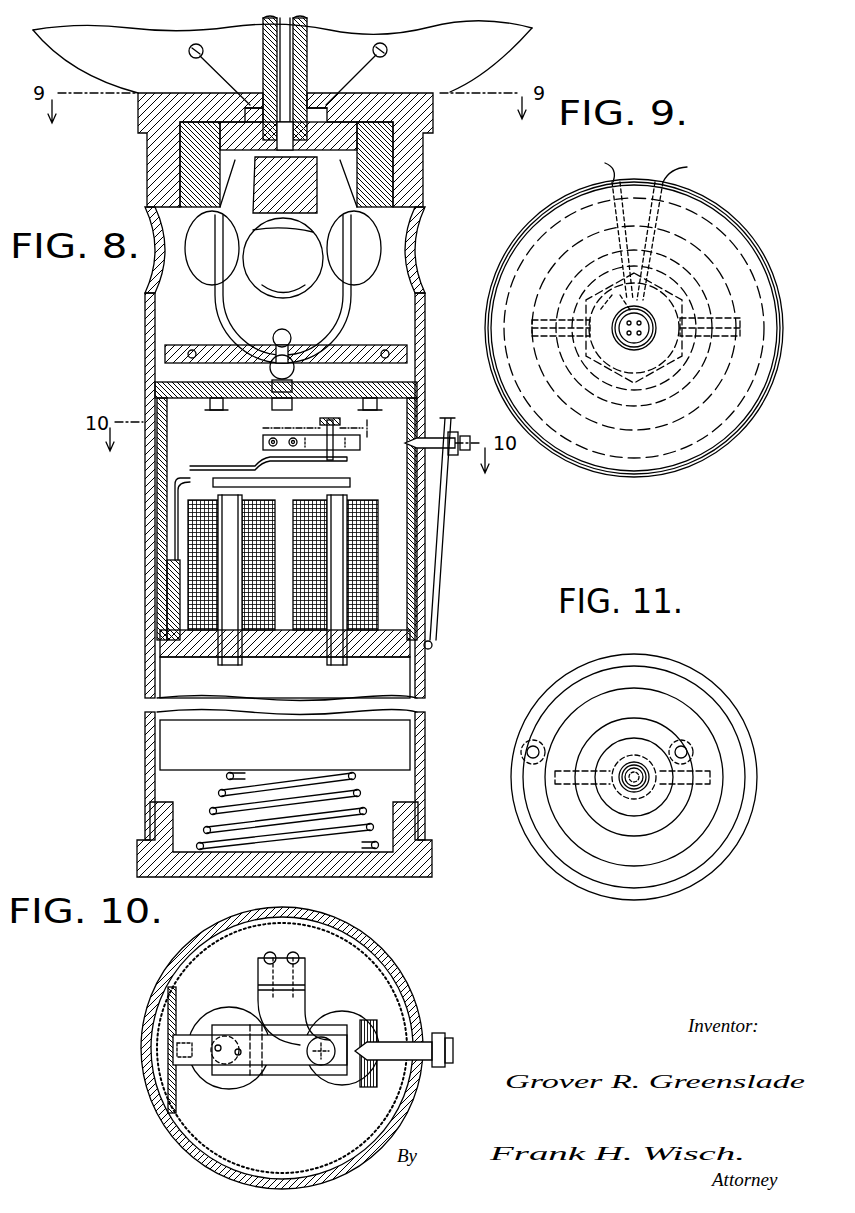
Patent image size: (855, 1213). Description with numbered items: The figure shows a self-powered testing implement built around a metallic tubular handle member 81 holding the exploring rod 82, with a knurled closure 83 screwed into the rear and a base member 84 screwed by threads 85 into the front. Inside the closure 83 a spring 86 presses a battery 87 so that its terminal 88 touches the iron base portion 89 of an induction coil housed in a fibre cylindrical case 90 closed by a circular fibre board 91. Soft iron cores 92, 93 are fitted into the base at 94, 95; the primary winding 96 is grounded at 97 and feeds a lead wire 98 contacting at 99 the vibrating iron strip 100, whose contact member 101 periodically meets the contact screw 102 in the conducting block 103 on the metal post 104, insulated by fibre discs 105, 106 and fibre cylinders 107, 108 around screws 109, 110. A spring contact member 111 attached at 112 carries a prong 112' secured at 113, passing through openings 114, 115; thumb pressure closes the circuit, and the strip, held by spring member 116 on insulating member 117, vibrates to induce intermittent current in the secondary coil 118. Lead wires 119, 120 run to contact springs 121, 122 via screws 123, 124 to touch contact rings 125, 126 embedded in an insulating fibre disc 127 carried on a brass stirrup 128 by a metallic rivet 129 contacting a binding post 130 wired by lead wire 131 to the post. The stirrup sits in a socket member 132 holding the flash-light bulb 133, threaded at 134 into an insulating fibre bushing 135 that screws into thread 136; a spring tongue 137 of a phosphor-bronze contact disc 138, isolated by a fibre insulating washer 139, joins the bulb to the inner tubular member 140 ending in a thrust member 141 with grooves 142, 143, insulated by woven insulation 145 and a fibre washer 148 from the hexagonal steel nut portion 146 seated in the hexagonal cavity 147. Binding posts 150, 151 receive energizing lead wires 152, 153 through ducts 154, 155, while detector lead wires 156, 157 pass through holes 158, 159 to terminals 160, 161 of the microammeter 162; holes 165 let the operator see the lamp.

In FIG. 8, the tubular handle member 81 is at (138, 616).
In FIG. 10, the tubular handle member 81 is at (402, 981).
In FIG. 8, the exploring rod 82 is at (308, 64).
In FIG. 9, the exploring rod 82 is at (627, 352).
In FIG. 8, the knurled closure 83 is at (137, 856).
In FIG. 8, the base member 84 is at (145, 114).
In FIG. 9, the base member 84 is at (722, 448).
In FIG. 8, the threads 85 is at (147, 177).
In FIG. 8, the spring 86 is at (347, 833).
In FIG. 8, the battery 87 is at (172, 744).
In FIG. 8, the terminal 88 is at (292, 660).
In FIG. 8, the iron base portion 89 is at (165, 663).
In FIG. 8, the cylindrical case 90 is at (157, 544).
In FIG. 10, the cylindrical case 90 is at (263, 1176).
In FIG. 8, the circular fibre board 91 is at (157, 394).
In FIG. 8, the core 92 is at (230, 557).
In FIG. 8, the core 93 is at (337, 579).
In FIG. 8, the core fitting 94 is at (218, 653).
In FIG. 8, the core fitting 95 is at (360, 661).
In FIG. 8, the primary winding 96 is at (370, 558).
In FIG. 10, the primary winding 96 is at (348, 1088).
In FIG. 8, the ground connection 97 is at (400, 619).
In FIG. 8, the lead wire 98 is at (240, 523).
In FIG. 8, the contact point 99 is at (185, 503).
In FIG. 8, the vibrating iron strip 100 is at (447, 523).
In FIG. 10, the vibrating iron strip 100 is at (287, 1075).
In FIG. 8, the contact member 101 is at (350, 483).
In FIG. 8, the contact screw 102 is at (347, 460).
In FIG. 10, the contact screw 102 is at (331, 1032).
In FIG. 8, the conducting block 103 is at (263, 461).
In FIG. 10, the conducting block 103 is at (240, 996).
In FIG. 8, the metal post 104 is at (345, 519).
In FIG. 10, the metal post 104 is at (303, 962).
In FIG. 10, the fibre disc 105 is at (310, 988).
In FIG. 10, the fibre disc 106 is at (262, 958).
In FIG. 10, the fibre cylinder 107 is at (311, 965).
In FIG. 10, the fibre cylinder 108 is at (262, 978).
In FIG. 10, the screw 109 is at (295, 952).
In FIG. 10, the screw 110 is at (266, 952).
In FIG. 8, the spring contact member 111 is at (449, 529).
In FIG. 10, the spring contact member 111 is at (432, 1066).
In FIG. 8, the attachment point 112 is at (456, 648).
In FIG. 8, the prong 112' is at (472, 470).
In FIG. 10, the prong 112' is at (427, 1103).
In FIG. 8, the prong attachment 113 is at (448, 431).
In FIG. 10, the prong attachment 113 is at (460, 1046).
In FIG. 8, the opening 114 is at (425, 419).
In FIG. 8, the opening 115 is at (450, 484).
In FIG. 8, the spring member 116 is at (178, 487).
In FIG. 10, the spring member 116 is at (182, 1070).
In FIG. 8, the insulating member 117 is at (165, 631).
In FIG. 10, the insulating member 117 is at (158, 1085).
In FIG. 8, the secondary coil 118 is at (172, 599).
In FIG. 10, the secondary coil 118 is at (230, 1090).
In FIG. 8, the lead wire 119 is at (175, 458).
In FIG. 8, the lead wire 120 is at (200, 448).
In FIG. 8, the contact spring 121 is at (160, 383).
In FIG. 8, the contact spring 122 is at (417, 381).
In FIG. 8, the screw 123 is at (207, 410).
In FIG. 8, the screw 124 is at (382, 417).
In FIG. 8, the contact ring 125 is at (165, 351).
In FIG. 11, the contact ring 125 is at (703, 857).
In FIG. 8, the contact ring 126 is at (417, 341).
In FIG. 11, the contact ring 126 is at (678, 808).
In FIG. 8, the insulating fibre disc 127 is at (405, 354).
In FIG. 11, the insulating fibre disc 127 is at (665, 900).
In FIG. 8, the brass stirrup 128 is at (417, 303).
In FIG. 11, the brass stirrup 128 is at (700, 773).
In FIG. 8, the metallic rivet 129 is at (292, 334).
In FIG. 11, the metallic rivet 129 is at (623, 788).
In FIG. 8, the binding post 130 is at (271, 374).
In FIG. 8, the lead wire 131 is at (243, 433).
In FIG. 8, the socket member 132 is at (417, 183).
In FIG. 8, the flash-light bulb 133 is at (272, 297).
In FIG. 8, the external thread 134 is at (428, 199).
In FIG. 8, the insulating fibre bushing 135 is at (190, 193).
In FIG. 9, the insulating fibre bushing 135 is at (665, 423).
In FIG. 8, the thread 136 is at (147, 143).
In FIG. 8, the spring tongue 137 is at (233, 224).
In FIG. 8, the phosphor-bronze contact disc 138 is at (336, 225).
In FIG. 8, the fibre insulating washer 139 is at (427, 123).
In FIG. 8, the inner tubular member 140 is at (272, 86).
In FIG. 8, the thrust member 141 is at (433, 107).
In FIG. 9, the thrust member 141 is at (672, 381).
In FIG. 9, the groove 142 is at (677, 278).
In FIG. 9, the groove 143 is at (697, 304).
In FIG. 8, the woven insulation 145 is at (270, 62).
In FIG. 8, the hexagonal steel nut portion 146 is at (312, 105).
In FIG. 9, the hexagonal steel nut portion 146 is at (620, 264).
In FIG. 9, the hexagonal cavity 147 is at (650, 258).
In FIG. 8, the fibre washer 148 is at (330, 110).
In FIG. 8, the binding post 150 is at (192, 347).
In FIG. 11, the binding post 150 is at (521, 749).
In FIG. 8, the binding post 151 is at (386, 347).
In FIG. 11, the binding post 151 is at (688, 748).
In FIG. 8, the lead wire 152 is at (160, 305).
In FIG. 9, the lead wire 152 is at (583, 353).
In FIG. 8, the lead wire 153 is at (416, 263).
In FIG. 9, the lead wire 153 is at (730, 319).
In FIG. 8, the duct 154 is at (185, 160).
In FIG. 9, the duct 154 is at (583, 306).
In FIG. 8, the duct 155 is at (425, 158).
In FIG. 9, the duct 155 is at (697, 353).
In FIG. 8, the lead wire 156 is at (243, 92).
In FIG. 9, the lead wire 156 is at (599, 223).
In FIG. 8, the lead wire 157 is at (395, 68).
In FIG. 9, the lead wire 157 is at (680, 224).
In FIG. 9, the hole 158 is at (600, 185).
In FIG. 9, the hole 159 is at (645, 180).
In FIG. 8, the terminal 160 is at (189, 50).
In FIG. 8, the terminal 161 is at (388, 50).
In FIG. 8, the microammeter 162 is at (527, 38).
In FIG. 8, the holes 165 is at (380, 254).